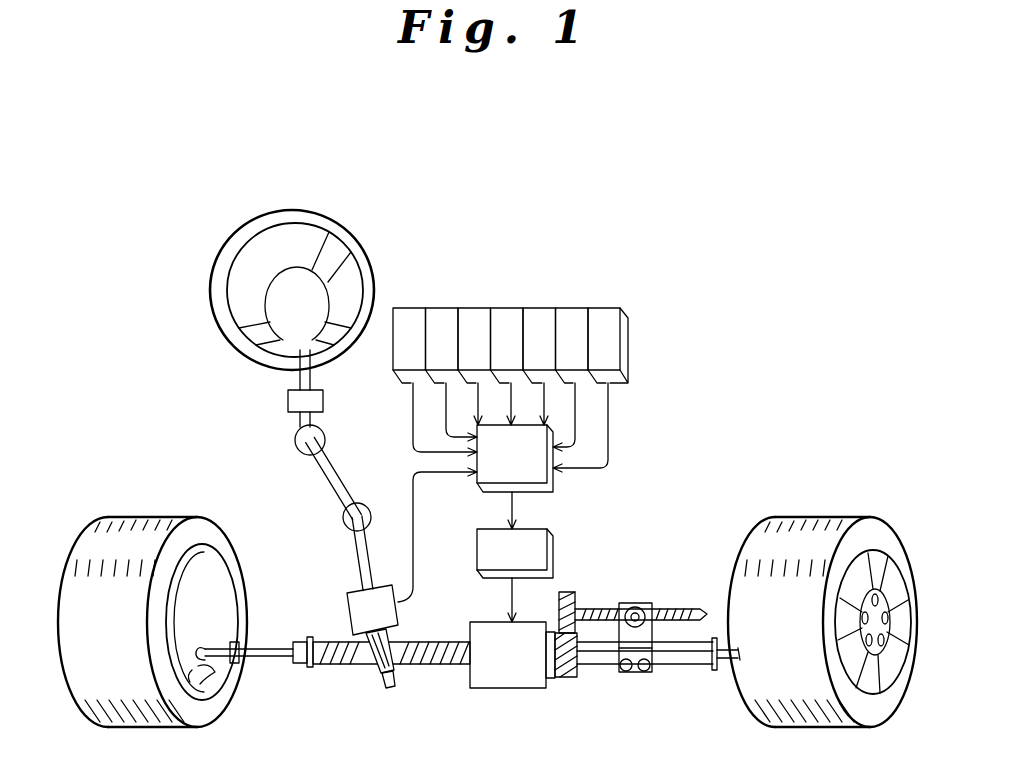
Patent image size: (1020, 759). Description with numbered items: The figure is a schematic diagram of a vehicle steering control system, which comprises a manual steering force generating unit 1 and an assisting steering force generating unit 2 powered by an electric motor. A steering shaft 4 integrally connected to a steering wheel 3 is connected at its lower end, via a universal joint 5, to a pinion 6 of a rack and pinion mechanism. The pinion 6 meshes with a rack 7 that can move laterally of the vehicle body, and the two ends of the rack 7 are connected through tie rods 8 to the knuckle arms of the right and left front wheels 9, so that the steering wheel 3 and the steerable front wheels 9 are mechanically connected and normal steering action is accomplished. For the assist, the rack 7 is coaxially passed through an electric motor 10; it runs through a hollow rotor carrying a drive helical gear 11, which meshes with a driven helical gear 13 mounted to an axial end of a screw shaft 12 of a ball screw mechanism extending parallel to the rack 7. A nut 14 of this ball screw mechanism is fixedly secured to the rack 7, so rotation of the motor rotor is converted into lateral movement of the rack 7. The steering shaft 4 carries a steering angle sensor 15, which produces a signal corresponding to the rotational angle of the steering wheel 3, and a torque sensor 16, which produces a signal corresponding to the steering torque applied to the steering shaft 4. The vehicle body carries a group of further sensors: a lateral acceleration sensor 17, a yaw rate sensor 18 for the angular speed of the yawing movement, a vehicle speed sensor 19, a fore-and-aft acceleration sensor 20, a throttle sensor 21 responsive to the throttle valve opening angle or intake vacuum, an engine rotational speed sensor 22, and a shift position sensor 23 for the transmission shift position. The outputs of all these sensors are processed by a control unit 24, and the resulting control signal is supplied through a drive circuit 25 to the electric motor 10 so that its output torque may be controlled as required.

The manual steering force generating unit 1 is at (507, 593).
The assisting steering force generating unit 2 is at (594, 623).
The steering wheel 3 is at (212, 283).
The steering shaft 4 is at (314, 427).
The universal joint 5 is at (330, 474).
The pinion 6 is at (378, 668).
The rack 7 is at (436, 664).
The tie rod 8 is at (266, 658).
The front wheel 9 is at (130, 517).
The electric motor 10 is at (514, 688).
The drive helical gear 11 is at (567, 677).
The screw shaft 12 is at (688, 609).
The driven helical gear 13 is at (566, 592).
The nut 14 is at (627, 603).
The steering angle sensor 15 is at (288, 400).
The torque sensor 16 is at (400, 616).
The lateral acceleration sensor 17 is at (403, 308).
The yaw rate sensor 18 is at (437, 308).
The vehicle speed sensor 19 is at (471, 308).
The fore-and-aft acceleration sensor 20 is at (513, 308).
The throttle sensor 21 is at (540, 308).
The engine rotational speed sensor 22 is at (575, 308).
The shift position sensor 23 is at (607, 308).
The control unit 24 is at (497, 470).
The drive circuit 25 is at (477, 550).